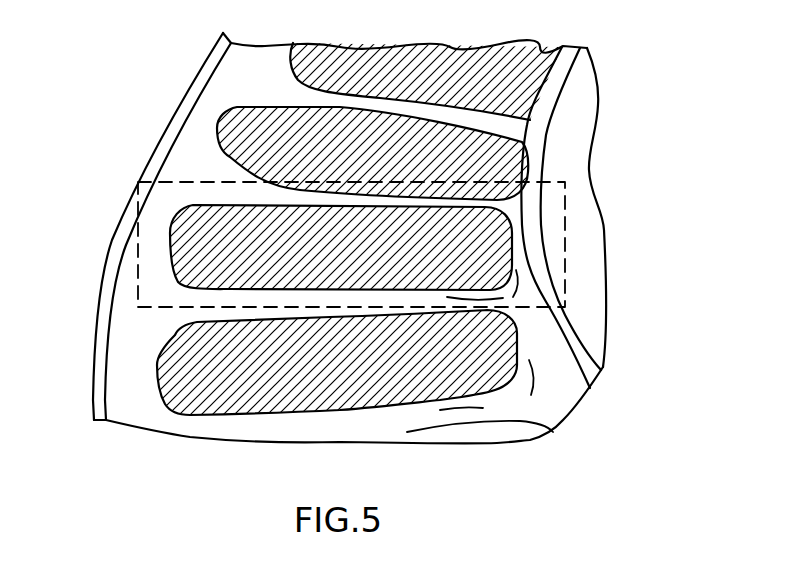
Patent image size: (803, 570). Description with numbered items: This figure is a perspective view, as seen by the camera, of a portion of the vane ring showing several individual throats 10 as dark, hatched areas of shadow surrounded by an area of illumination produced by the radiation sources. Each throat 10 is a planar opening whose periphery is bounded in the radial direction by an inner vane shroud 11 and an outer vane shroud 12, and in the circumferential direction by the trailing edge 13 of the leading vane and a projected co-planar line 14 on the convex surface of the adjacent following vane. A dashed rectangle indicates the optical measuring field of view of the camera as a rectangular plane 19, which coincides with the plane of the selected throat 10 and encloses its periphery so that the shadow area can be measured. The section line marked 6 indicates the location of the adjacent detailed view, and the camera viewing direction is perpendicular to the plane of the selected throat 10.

The section line 6- 6 is at (355, 167).
The throat 10 is at (502, 90).
The inner vane shroud 11 is at (545, 296).
The outer vane shroud 12 is at (105, 384).
The trailing edge 13 is at (193, 207).
The projected co-planar line 14 is at (227, 287).
The rectangular plane 19 is at (578, 222).